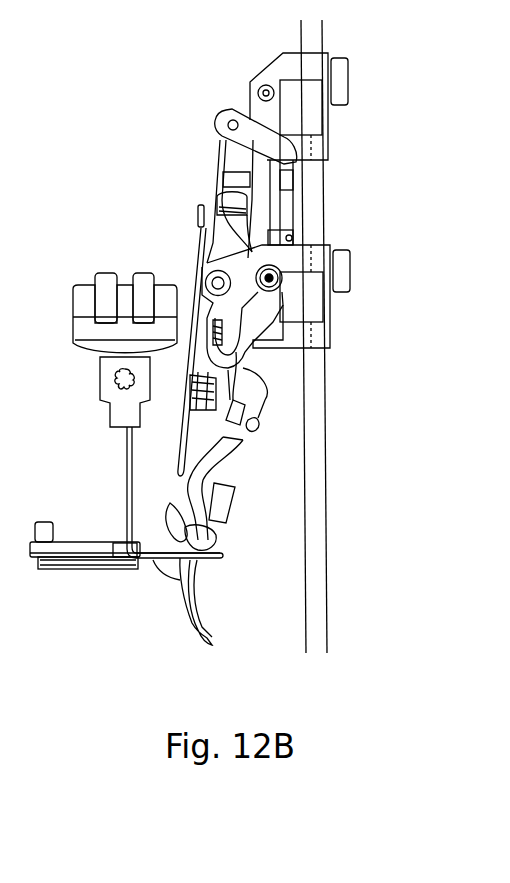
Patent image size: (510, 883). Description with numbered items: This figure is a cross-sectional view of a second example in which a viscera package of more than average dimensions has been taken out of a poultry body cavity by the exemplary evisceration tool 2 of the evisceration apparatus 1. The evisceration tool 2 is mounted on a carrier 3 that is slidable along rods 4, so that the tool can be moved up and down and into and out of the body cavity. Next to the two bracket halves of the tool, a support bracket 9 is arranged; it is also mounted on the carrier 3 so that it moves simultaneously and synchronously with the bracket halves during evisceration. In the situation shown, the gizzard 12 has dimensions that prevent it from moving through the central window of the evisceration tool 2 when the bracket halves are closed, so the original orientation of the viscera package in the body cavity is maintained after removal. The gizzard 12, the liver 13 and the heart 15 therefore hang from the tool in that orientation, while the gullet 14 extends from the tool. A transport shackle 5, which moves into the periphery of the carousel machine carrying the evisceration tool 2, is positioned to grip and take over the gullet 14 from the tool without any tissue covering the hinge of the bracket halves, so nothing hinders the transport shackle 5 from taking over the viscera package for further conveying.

The evisceration apparatus 1 is at (376, 261).
The evisceration tool 2 is at (247, 416).
The carrier 3 is at (194, 215).
The rods 4 is at (334, 374).
The transport shackle 5 is at (116, 488).
The support bracket 9 is at (167, 396).
The gizzard 12 is at (224, 437).
The liver 13 is at (220, 491).
The gullet 14 is at (174, 597).
The heart 15 is at (202, 533).